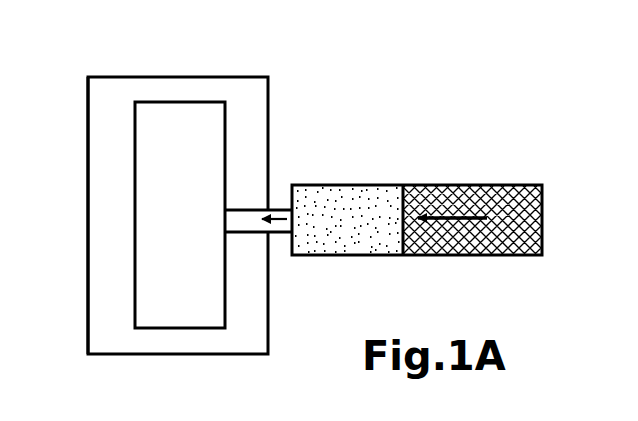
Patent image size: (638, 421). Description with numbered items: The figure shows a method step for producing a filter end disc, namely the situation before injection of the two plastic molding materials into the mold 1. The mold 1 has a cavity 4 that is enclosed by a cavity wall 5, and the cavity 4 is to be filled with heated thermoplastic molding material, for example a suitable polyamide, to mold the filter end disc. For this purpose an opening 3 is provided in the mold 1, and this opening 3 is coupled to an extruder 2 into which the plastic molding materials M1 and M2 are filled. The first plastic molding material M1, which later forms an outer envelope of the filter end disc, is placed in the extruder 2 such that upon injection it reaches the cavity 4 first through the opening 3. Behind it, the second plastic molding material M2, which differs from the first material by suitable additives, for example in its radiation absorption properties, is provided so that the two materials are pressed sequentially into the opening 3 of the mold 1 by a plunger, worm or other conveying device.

The mold 1 is at (217, 73).
The extruder 2 is at (348, 256).
The opening 3 is at (250, 207).
The cavity 4 is at (186, 278).
The cavity wall 5 is at (135, 182).
The first plastic molding material M1 is at (350, 203).
The second plastic molding material M2 is at (461, 200).